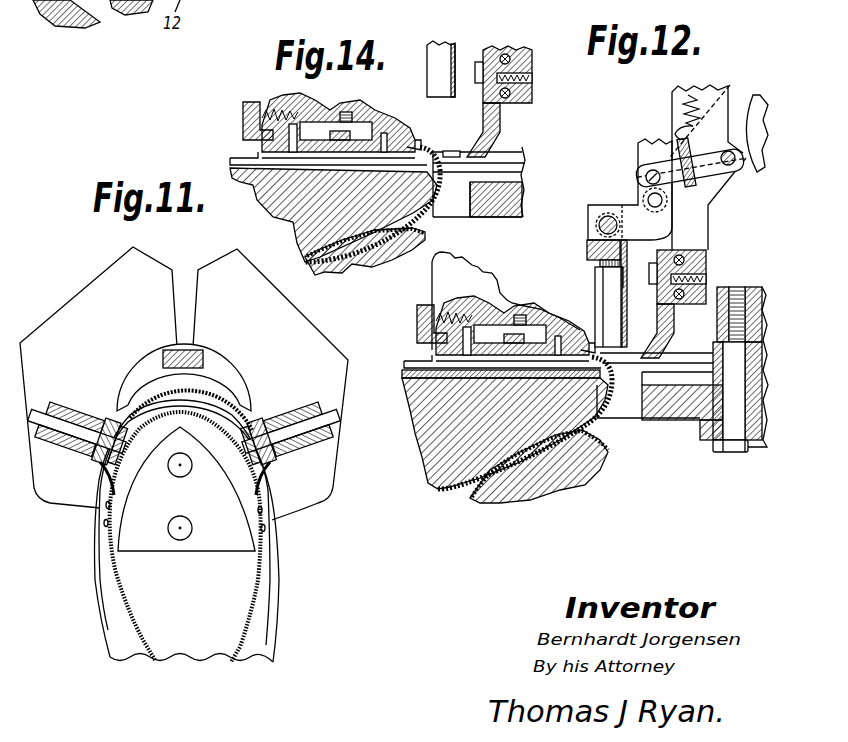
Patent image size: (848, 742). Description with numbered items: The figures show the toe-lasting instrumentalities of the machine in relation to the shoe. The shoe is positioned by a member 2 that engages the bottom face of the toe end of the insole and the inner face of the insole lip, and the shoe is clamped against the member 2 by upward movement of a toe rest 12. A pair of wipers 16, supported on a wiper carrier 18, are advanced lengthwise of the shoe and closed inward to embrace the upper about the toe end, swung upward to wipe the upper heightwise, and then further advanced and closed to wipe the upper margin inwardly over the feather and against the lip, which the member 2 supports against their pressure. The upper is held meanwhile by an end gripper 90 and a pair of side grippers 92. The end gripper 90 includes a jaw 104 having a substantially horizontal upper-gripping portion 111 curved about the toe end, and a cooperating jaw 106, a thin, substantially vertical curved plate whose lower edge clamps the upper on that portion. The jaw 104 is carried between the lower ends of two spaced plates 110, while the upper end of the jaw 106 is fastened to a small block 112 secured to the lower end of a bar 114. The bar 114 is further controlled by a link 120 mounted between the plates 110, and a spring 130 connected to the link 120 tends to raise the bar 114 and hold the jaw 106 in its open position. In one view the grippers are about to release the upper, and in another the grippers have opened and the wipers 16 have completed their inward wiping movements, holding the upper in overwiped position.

In FIG. 11, the member 2 is at (208, 545).
In FIG. 14, the member 2 is at (407, 146).
In FIG. 12, the member 2 is at (435, 362).
In FIG. 14, the toe rest 12 is at (377, 265).
In FIG. 12, the toe rest 12 is at (543, 487).
In FIG. 11, the wipers 16 is at (97, 284).
In FIG. 14, the wipers 16 is at (517, 163).
In FIG. 12, the wipers 16 is at (657, 368).
In FIG. 12, the wiper carrier 18 is at (678, 413).
In FIG. 11, the end gripper 90 is at (190, 350).
In FIG. 12, the end gripper 90 is at (698, 273).
In FIG. 11, the side grippers 92 is at (75, 408).
In FIG. 11, the jaw 104 is at (213, 369).
In FIG. 14, the jaw 104 is at (500, 116).
In FIG. 12, the jaw 104 is at (674, 331).
In FIG. 11, the jaw 106 is at (216, 404).
In FIG. 14, the jaw 106 is at (453, 44).
In FIG. 12, the jaw 106 is at (603, 298).
In FIG. 12, the plates 110 is at (700, 215).
In FIG. 14, the upper-gripping portion 111 is at (450, 150).
In FIG. 12, the small block 112 is at (587, 247).
In FIG. 12, the bar 114 is at (640, 156).
In FIG. 12, the link 120 is at (707, 172).
In FIG. 12, the spring 130 is at (700, 99).